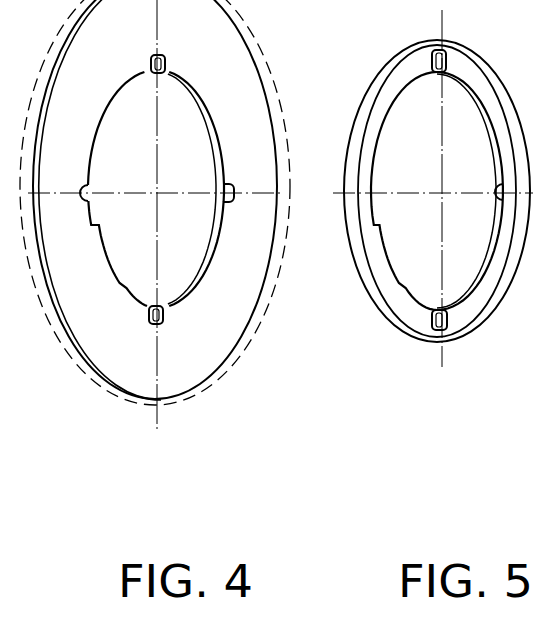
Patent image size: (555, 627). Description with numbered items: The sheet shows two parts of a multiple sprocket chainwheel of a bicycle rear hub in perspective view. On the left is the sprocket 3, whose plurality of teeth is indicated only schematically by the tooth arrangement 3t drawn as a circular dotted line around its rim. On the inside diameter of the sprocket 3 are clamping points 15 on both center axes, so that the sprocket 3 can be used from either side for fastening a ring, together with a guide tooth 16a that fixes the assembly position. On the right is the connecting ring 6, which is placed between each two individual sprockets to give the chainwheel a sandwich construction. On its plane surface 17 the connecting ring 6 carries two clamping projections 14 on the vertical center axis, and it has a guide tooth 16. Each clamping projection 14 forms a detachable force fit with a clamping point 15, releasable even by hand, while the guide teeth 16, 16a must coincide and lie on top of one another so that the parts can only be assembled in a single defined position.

In FIG. 4, the sprocket 3 is at (187, 370).
In FIG. 4, the tooth arrangement 3t is at (97, 387).
In FIG. 4, the clamping points 15 is at (157, 70).
In FIG. 4, the guide tooth 16a is at (110, 258).
In FIG. 5, the plane surface 17 is at (478, 73).
In FIG. 5, the connecting ring 6 is at (420, 322).
In FIG. 5, the guide tooth 16 is at (408, 240).
In FIG. 5, the clamping projections 14 is at (432, 73).